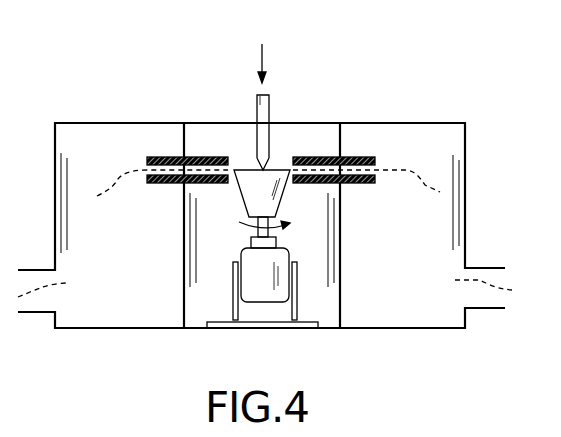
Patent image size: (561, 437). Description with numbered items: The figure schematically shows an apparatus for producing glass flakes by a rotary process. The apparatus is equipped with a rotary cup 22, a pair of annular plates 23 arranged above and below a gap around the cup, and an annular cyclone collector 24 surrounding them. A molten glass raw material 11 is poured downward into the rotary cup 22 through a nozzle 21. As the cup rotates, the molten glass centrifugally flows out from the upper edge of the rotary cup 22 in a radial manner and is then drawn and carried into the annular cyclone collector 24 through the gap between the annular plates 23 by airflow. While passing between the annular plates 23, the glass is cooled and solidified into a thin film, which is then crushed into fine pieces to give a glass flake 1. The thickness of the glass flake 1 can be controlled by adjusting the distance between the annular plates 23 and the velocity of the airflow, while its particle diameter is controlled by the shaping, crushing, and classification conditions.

The glass flake 1 is at (40, 288).
The molten glass raw material 11 is at (292, 168).
The nozzle 21 is at (270, 118).
The rotary cup 22 is at (250, 175).
The annular plates 23 is at (392, 158).
The annular cyclone collector 24 is at (118, 123).